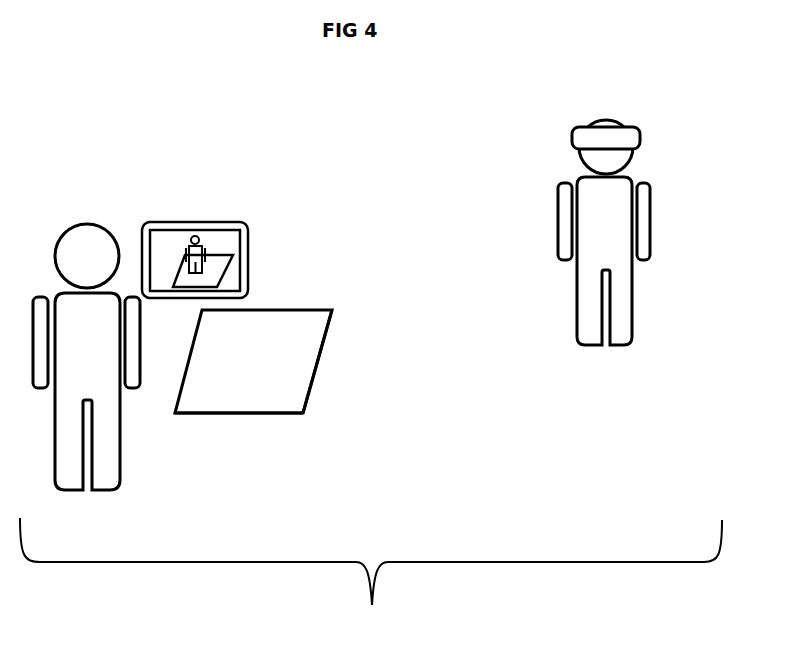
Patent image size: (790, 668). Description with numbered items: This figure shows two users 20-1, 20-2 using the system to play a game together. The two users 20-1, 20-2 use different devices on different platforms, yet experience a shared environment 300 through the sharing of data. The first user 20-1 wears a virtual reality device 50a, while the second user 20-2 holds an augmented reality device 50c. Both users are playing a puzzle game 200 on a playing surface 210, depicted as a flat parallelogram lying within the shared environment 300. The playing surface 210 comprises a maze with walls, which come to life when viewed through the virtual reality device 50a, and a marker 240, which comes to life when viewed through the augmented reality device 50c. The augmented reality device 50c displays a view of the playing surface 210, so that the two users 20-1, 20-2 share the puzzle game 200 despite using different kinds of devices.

The user 20-1 is at (624, 347).
The user 20-2 is at (110, 488).
The virtual reality device 50a is at (620, 136).
The augmented reality device 50c is at (251, 242).
The puzzle game 200 is at (300, 385).
The playing surface 210 is at (304, 339).
The marker 240 is at (231, 385).
The shared environment 300 is at (371, 580).